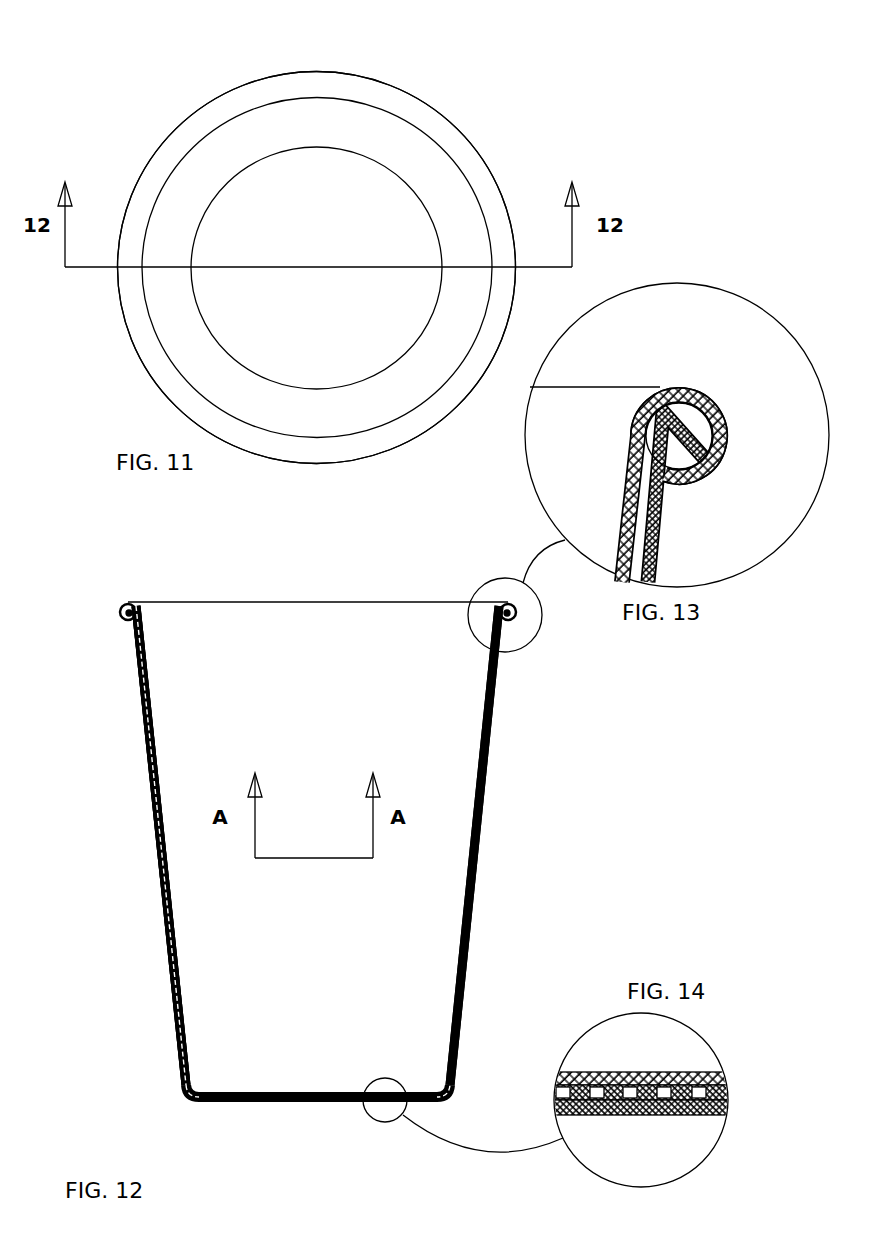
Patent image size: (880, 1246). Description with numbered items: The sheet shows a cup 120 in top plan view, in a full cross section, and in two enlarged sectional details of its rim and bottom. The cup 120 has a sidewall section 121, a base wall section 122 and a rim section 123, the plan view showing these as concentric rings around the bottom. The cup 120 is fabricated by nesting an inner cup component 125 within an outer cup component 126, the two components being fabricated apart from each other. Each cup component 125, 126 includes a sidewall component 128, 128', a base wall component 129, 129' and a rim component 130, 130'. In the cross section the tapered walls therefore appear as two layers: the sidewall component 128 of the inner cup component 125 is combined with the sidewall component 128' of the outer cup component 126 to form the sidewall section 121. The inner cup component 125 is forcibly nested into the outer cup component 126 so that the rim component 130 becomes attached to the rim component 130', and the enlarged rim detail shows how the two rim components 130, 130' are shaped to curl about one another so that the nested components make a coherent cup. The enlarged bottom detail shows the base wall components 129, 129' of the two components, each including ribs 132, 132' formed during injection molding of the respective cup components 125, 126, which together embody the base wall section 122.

In FIG. 11, the cup 120 is at (239, 86).
In FIG. 12, the cup 120 is at (128, 602).
In FIG. 11, the sidewall section 121 is at (348, 118).
In FIG. 12, the sidewall section 121 is at (140, 752).
In FIG. 11, the base wall section 122 is at (316, 268).
In FIG. 12, the base wall section 122 is at (243, 1104).
In FIG. 11, the rim section 123 is at (452, 140).
In FIG. 12, the rim section 123 is at (118, 620).
In FIG. 12, the inner cup component 125 is at (152, 712).
In FIG. 12, the outer cup component 126 is at (141, 718).
In FIG. 12, the sidewall component 128 is at (445, 845).
In FIG. 13, the sidewall component 128 is at (642, 488).
In FIG. 12, the sidewall component 128' is at (500, 845).
In FIG. 13, the sidewall component 128' is at (693, 497).
In FIG. 12, the base wall component 129 is at (318, 1073).
In FIG. 14, the base wall component 129 is at (664, 1050).
In FIG. 12, the base wall component 129' is at (318, 1125).
In FIG. 14, the base wall component 129' is at (674, 1141).
In FIG. 13, the rim component 130 is at (690, 409).
In FIG. 13, the rim component 130' is at (727, 436).
In FIG. 14, the ribs 132 is at (642, 1067).
In FIG. 14, the ribs 132' is at (631, 1128).